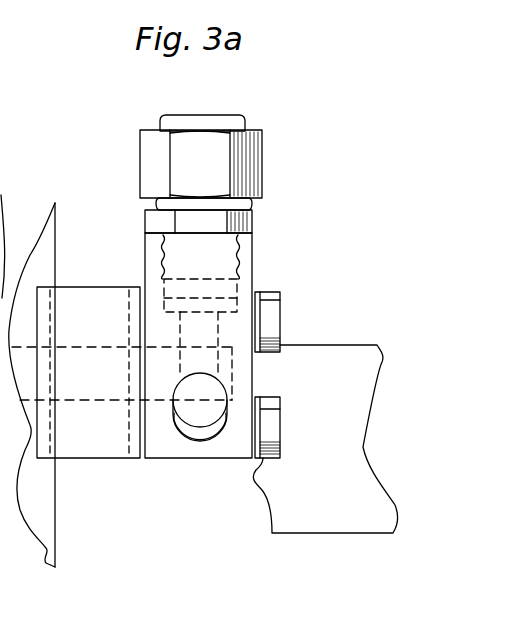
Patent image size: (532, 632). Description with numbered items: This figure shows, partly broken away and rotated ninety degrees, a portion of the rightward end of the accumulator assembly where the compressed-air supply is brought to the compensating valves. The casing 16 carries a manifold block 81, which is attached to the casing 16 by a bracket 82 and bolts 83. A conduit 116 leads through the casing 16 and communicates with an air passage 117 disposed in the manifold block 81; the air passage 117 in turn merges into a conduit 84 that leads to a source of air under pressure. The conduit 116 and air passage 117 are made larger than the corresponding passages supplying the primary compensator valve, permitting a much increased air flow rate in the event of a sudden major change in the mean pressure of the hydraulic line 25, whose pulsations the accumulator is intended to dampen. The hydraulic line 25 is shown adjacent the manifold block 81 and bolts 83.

The casing 16 is at (52, 248).
The hydraulic line 25 is at (360, 423).
The manifold block 81 is at (252, 260).
The bracket 82 is at (105, 447).
The bolts 83 is at (275, 322).
The conduit 84 is at (256, 165).
The conduit 116 is at (62, 338).
The air passage 117 is at (212, 338).